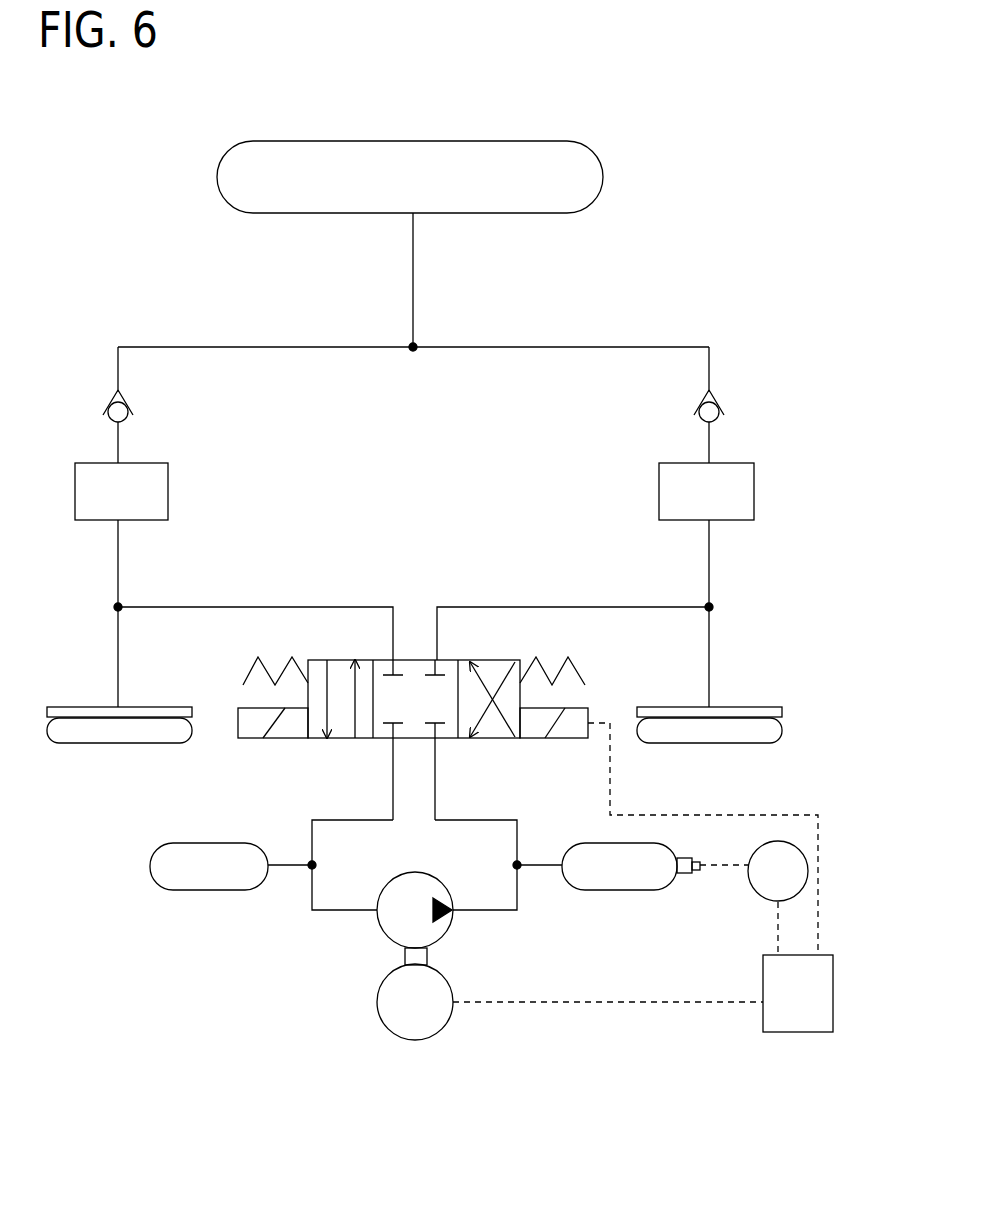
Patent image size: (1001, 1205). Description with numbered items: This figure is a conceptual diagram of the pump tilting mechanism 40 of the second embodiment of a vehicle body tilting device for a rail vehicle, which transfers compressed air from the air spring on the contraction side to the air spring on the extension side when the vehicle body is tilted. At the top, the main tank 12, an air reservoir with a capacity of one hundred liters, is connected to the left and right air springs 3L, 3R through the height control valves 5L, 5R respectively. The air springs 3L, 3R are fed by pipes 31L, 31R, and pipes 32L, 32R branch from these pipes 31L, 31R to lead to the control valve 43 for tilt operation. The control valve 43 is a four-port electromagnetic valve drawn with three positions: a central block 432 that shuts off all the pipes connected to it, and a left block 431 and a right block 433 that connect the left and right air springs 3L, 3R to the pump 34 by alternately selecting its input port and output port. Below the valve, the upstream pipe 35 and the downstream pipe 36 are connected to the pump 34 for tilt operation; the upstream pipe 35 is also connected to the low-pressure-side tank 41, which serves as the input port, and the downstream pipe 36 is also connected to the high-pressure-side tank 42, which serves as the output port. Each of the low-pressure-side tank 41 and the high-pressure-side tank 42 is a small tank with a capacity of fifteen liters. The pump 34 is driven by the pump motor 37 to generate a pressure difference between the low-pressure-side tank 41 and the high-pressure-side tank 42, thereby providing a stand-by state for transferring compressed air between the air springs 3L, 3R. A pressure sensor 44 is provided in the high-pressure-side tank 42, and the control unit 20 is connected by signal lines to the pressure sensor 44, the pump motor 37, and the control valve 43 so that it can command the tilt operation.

The main tank 12 is at (388, 152).
The height control valve 5L is at (150, 475).
The height control valve 5R is at (738, 480).
The pipe 31L is at (118, 561).
The pipe 31R is at (709, 561).
The pipe 32L is at (258, 607).
The pipe 32R is at (582, 607).
The air spring 3L is at (120, 730).
The air spring 3R is at (714, 730).
The pump tilting mechanism 40 is at (444, 540).
The control valve 43 is at (413, 709).
The left block 431 is at (343, 740).
The central block 432 is at (387, 740).
The right block 433 is at (512, 740).
The downstream pipe 36 is at (450, 818).
The upstream pipe 35 is at (312, 830).
The pump 34 is at (433, 930).
The pump motor 37 is at (433, 1022).
The low-pressure-side tank 41 is at (203, 876).
The high-pressure-side tank 42 is at (627, 877).
The pressure sensor 44 is at (810, 871).
The control unit 20 is at (800, 1012).